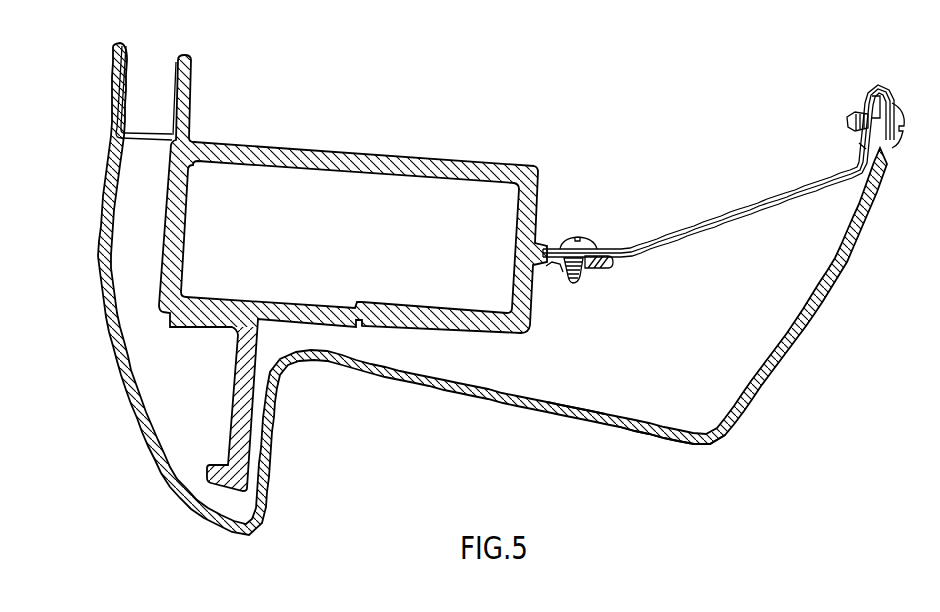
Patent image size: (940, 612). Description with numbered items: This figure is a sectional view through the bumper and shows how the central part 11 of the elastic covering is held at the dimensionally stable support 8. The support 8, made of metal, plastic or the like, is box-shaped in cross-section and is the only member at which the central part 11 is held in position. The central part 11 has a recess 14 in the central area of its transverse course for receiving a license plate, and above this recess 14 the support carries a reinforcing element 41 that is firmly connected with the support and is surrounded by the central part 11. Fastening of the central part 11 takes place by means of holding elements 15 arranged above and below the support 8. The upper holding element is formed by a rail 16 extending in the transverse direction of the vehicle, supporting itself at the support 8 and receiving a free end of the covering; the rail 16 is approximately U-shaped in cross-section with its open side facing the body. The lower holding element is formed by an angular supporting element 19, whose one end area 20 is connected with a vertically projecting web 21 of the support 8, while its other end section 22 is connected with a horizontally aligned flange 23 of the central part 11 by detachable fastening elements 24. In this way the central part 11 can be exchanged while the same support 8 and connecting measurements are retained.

The dimensionally stable support 8 is at (337, 148).
The central part 11 is at (669, 437).
The recess 14 is at (382, 374).
The holding elements 15 is at (106, 69).
The rail 16 is at (138, 143).
The angular supporting element 19 is at (741, 222).
The end area 20 is at (557, 238).
The vertically projecting web 21 is at (604, 269).
The end section 22 is at (866, 91).
The horizontally aligned flange 23 is at (891, 104).
The detachable fastening elements 24 is at (578, 284).
The reinforcing element 41 is at (237, 427).